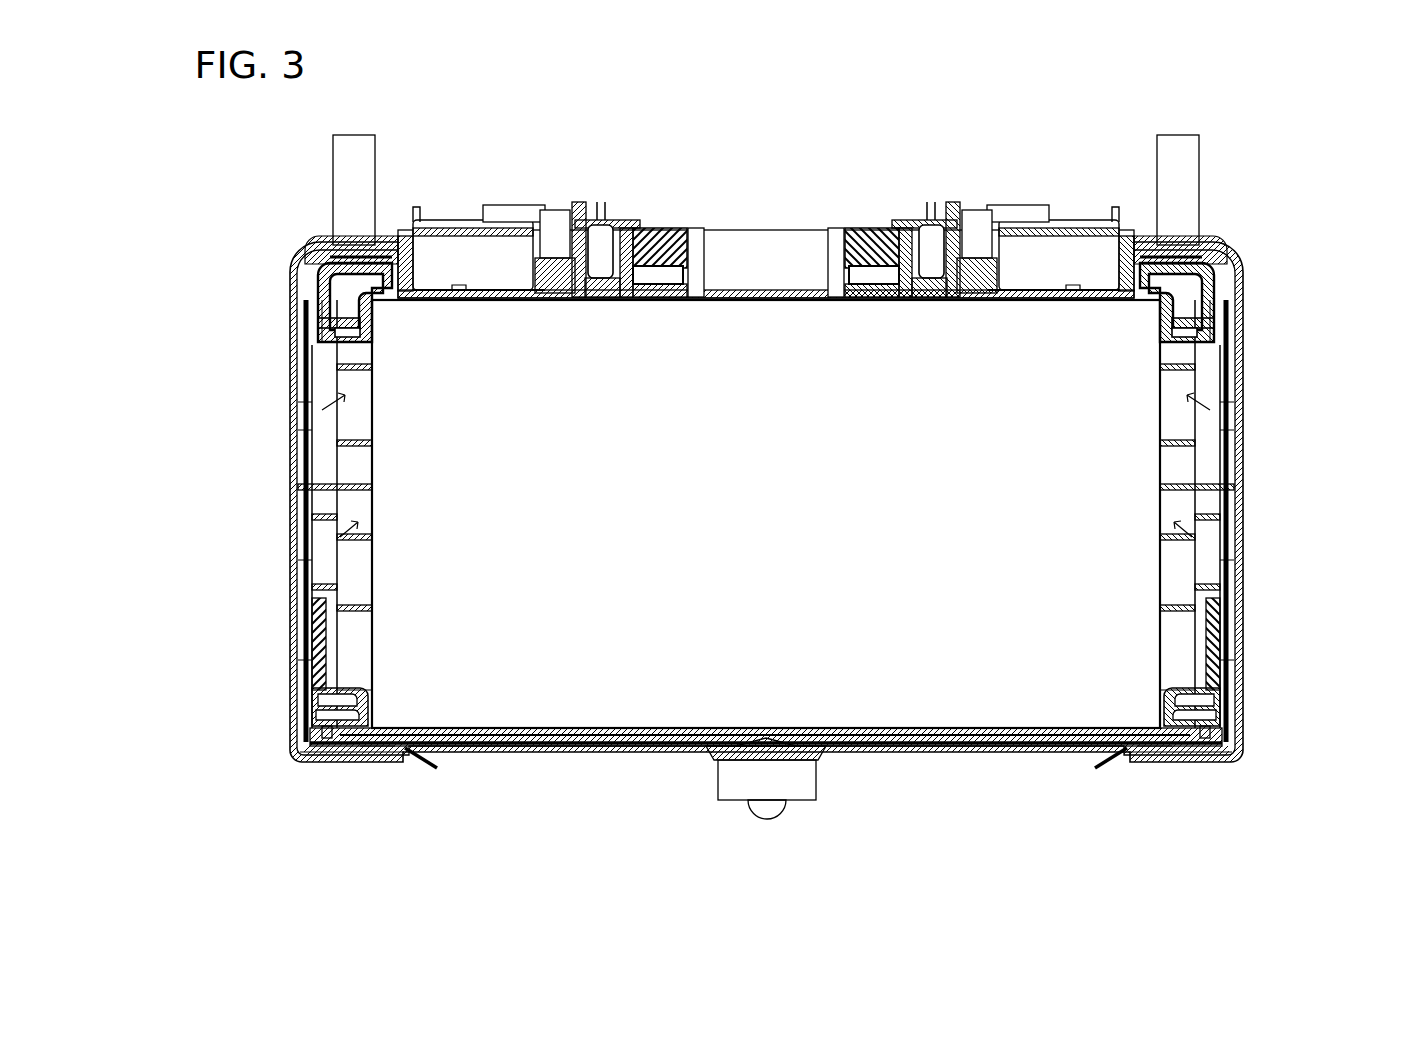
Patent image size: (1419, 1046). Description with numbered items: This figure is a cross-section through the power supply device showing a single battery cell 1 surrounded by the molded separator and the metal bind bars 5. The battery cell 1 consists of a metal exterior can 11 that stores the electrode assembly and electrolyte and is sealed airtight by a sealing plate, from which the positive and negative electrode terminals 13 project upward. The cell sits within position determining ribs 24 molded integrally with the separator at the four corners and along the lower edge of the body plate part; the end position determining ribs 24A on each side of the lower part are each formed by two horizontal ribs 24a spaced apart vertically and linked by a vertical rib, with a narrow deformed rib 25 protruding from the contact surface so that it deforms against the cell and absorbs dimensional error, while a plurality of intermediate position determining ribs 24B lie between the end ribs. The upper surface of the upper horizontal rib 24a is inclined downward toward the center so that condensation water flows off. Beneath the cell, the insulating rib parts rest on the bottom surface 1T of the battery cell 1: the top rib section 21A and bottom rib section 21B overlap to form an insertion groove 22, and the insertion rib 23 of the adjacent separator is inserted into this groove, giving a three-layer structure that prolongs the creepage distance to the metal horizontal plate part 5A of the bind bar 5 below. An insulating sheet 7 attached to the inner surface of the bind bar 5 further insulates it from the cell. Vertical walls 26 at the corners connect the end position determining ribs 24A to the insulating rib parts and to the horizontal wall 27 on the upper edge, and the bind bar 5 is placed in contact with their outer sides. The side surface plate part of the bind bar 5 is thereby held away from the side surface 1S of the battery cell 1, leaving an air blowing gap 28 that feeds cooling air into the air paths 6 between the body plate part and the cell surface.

The battery cell 1 is at (760, 340).
The bottom surface of battery cell 1T is at (627, 752).
The side surface of battery cell 1S is at (370, 490).
The bind bar 5 is at (292, 520).
The horizontal plate part 5A is at (342, 765).
The air path 6 is at (322, 418).
The insulating sheet 7 is at (430, 772).
The exterior can 11 is at (782, 515).
The electrode terminal 13 is at (465, 282).
The top rib section 21A is at (425, 735).
The bottom rib section 21B is at (490, 752).
The insertion groove 22 is at (305, 750).
The insertion rib 23 is at (375, 762).
The position determining rib 24 is at (395, 562).
The end position determining rib 24A is at (322, 368).
The intermediate position determining rib 24B is at (525, 728).
The horizontal rib 24a is at (362, 345).
The deformed rib 25 is at (1160, 308).
The vertical wall 26 is at (312, 300).
The horizontal wall 27 is at (347, 246).
The air blowing gap 28 is at (322, 550).